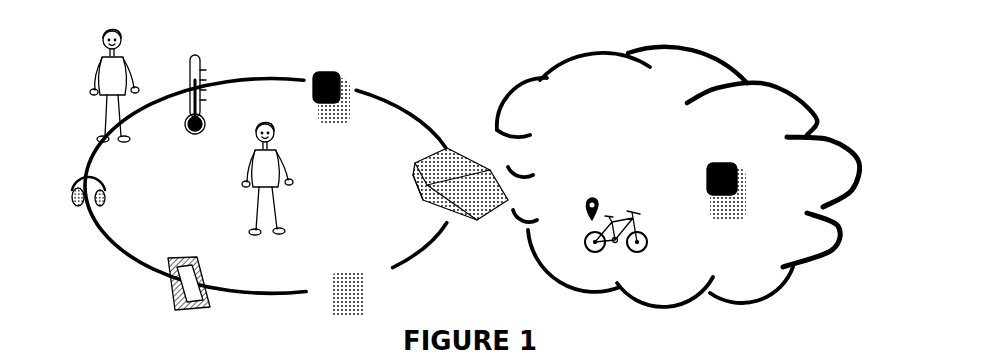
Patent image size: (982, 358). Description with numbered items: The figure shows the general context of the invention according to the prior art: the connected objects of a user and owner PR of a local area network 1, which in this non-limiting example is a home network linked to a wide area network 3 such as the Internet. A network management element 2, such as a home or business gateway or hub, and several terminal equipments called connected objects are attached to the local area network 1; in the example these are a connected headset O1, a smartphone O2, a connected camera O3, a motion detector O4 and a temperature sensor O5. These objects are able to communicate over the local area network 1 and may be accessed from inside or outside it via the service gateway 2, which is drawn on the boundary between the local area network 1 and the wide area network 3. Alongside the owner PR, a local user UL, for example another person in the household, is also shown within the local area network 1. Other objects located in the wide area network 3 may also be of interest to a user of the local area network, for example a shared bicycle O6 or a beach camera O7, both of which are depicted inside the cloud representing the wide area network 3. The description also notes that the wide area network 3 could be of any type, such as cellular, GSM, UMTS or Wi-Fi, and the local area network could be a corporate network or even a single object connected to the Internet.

The local area network 1 is at (431, 125).
The network management element 2 is at (487, 169).
The wide area network 3 is at (817, 101).
The local user UL is at (101, 81).
The owner PR is at (254, 178).
The connected headset O1 is at (75, 176).
The smartphone O2 is at (183, 258).
The connected camera O3 is at (340, 66).
The motion detector O4 is at (348, 258).
The temperature sensor O5 is at (190, 73).
The shared bicycle O6 is at (617, 214).
The beach camera O7 is at (733, 157).